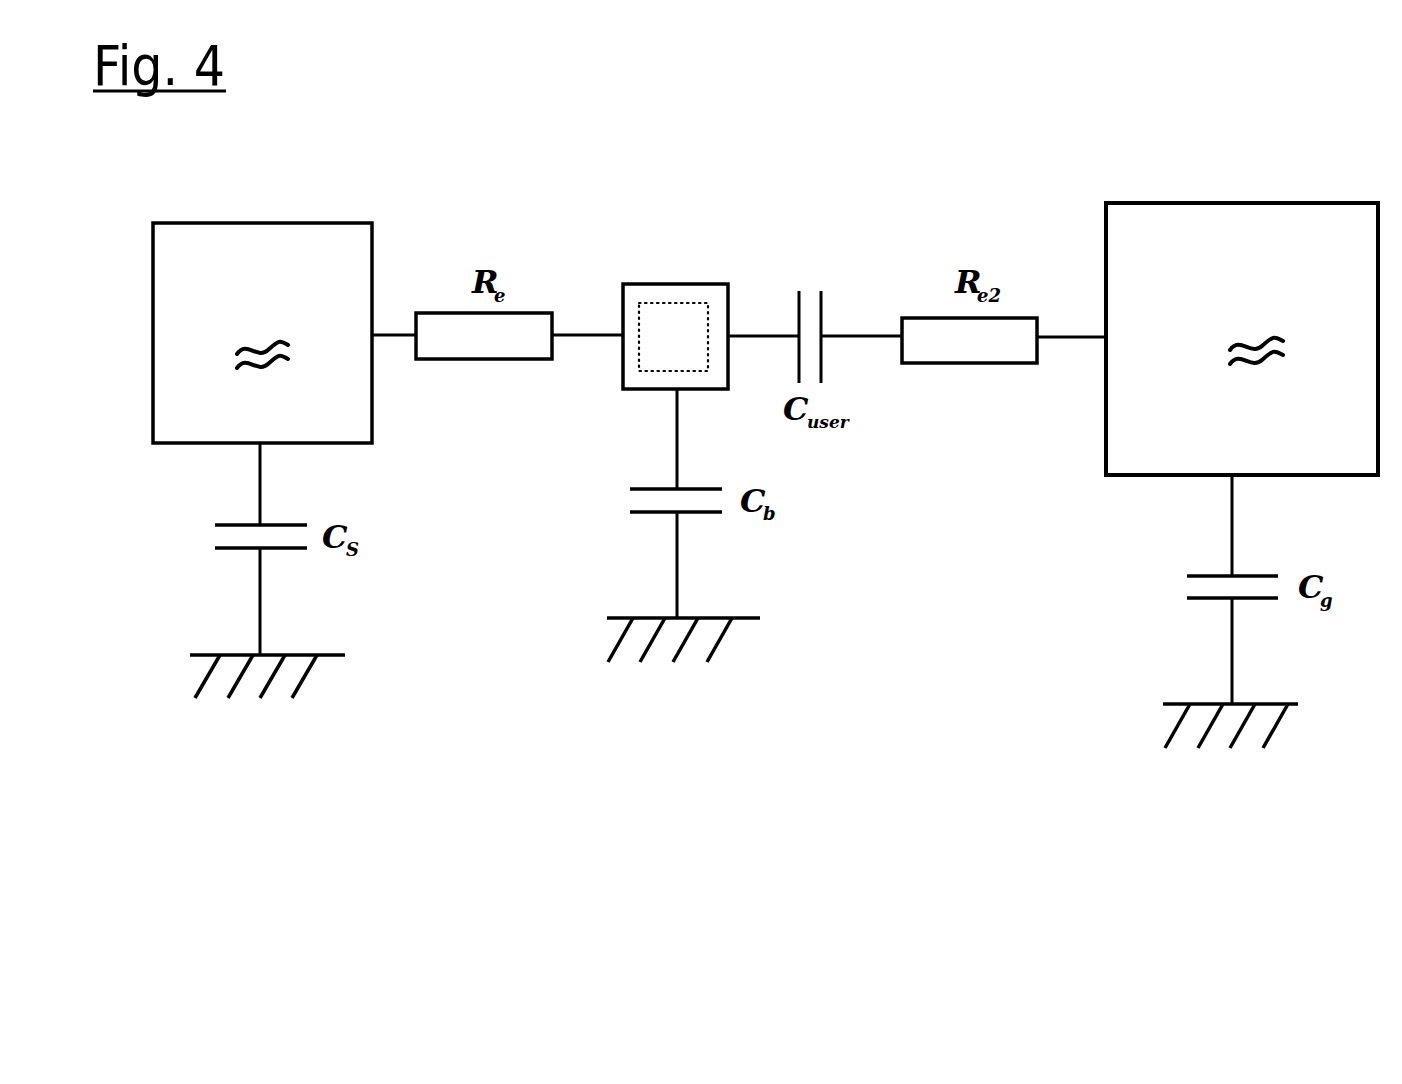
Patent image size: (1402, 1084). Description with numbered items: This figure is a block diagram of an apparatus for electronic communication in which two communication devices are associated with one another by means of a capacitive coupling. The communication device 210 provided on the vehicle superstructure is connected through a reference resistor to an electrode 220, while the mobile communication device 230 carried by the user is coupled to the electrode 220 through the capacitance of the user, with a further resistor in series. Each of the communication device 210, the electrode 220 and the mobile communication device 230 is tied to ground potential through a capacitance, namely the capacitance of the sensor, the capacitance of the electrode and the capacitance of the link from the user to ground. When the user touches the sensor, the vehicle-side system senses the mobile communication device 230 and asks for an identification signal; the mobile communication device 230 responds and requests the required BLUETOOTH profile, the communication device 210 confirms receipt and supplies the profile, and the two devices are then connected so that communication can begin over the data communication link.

The communication device 210 is at (304, 291).
The electrode 220 is at (702, 358).
The mobile communication device 230 is at (1332, 272).